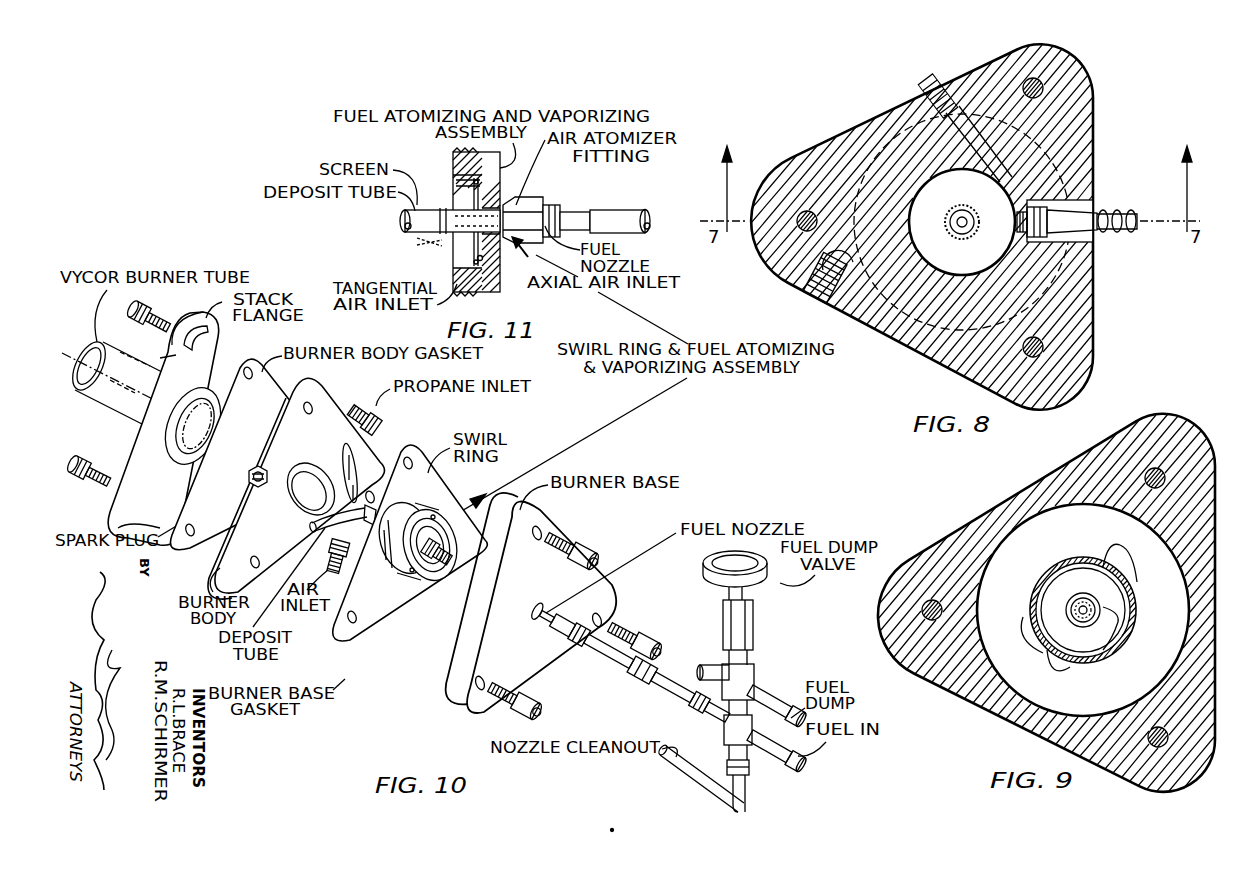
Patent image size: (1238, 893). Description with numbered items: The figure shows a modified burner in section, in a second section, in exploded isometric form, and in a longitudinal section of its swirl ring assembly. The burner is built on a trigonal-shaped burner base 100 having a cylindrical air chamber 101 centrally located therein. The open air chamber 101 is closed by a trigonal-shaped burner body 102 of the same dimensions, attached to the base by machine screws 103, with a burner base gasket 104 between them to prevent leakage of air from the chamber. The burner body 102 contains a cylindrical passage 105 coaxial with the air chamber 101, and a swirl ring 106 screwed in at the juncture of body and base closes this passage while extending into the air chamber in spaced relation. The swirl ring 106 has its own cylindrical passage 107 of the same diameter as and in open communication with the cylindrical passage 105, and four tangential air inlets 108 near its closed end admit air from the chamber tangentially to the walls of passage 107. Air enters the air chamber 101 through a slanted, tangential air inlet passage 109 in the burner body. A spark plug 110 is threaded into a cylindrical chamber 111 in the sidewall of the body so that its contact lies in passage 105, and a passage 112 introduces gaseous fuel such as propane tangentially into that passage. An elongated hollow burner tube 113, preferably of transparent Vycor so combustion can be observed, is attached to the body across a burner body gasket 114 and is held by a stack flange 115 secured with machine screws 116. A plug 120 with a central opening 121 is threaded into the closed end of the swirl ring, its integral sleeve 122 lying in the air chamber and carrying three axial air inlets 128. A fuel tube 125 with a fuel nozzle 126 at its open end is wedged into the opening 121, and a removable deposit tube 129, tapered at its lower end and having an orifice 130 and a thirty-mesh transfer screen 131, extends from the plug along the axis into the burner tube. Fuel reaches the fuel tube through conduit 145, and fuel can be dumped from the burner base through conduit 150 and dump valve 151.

In FIG. 8, the burner base 100 is at (922, 227).
In FIG. 9, the burner base 100 is at (1003, 500).
In FIG. 10, the burner base 100 is at (554, 521).
In FIG. 9, the air chamber 101 is at (1063, 534).
In FIG. 10, the burner body 102 is at (318, 378).
In FIG. 8, the machine screws 103 is at (1043, 86).
In FIG. 9, the machine screws 103 is at (1156, 466).
In FIG. 10, the machine screws 103 is at (597, 550).
In FIG. 10, the burner base gasket 104 is at (427, 442).
In FIG. 8, the cylindrical passage 105 is at (961, 196).
In FIG. 8, the swirl ring 106 is at (940, 258).
In FIG. 9, the swirl ring 106 is at (1047, 690).
In FIG. 11, the swirl ring 106 is at (472, 152).
In FIG. 10, the swirl ring 106 is at (455, 497).
In FIG. 9, the cylindrical passage 107 is at (1083, 610).
In FIG. 9, the tangential air inlets 108 is at (1136, 570).
In FIG. 11, the tangential air inlets 108 is at (478, 258).
In FIG. 10, the tangential air inlets 108 is at (410, 580).
In FIG. 8, the air inlet passage 109 is at (830, 283).
In FIG. 10, the air inlet passage 109 is at (342, 566).
In FIG. 8, the spark plug 110 is at (1112, 208).
In FIG. 10, the spark plug 110 is at (270, 466).
In FIG. 8, the cylindrical chamber 111 is at (1095, 236).
In FIG. 8, the gaseous fuel passage 112 is at (950, 108).
In FIG. 10, the gaseous fuel passage 112 is at (382, 414).
In FIG. 10, the burner tube 113 is at (100, 405).
In FIG. 10, the burner body gasket 114 is at (263, 360).
In FIG. 10, the stack flange 115 is at (228, 338).
In FIG. 10, the machine screws 116 is at (158, 320).
In FIG. 8, the plug 120 is at (977, 226).
In FIG. 9, the plug 120 is at (1118, 650).
In FIG. 11, the plug 120 is at (511, 207).
In FIG. 11, the central opening 121 is at (503, 222).
In FIG. 11, the sleeve 122 is at (546, 198).
In FIG. 11, the fuel tube 125 is at (636, 212).
In FIG. 10, the fuel tube 125 is at (653, 674).
In FIG. 11, the fuel nozzle 126 is at (560, 210).
In FIG. 10, the fuel nozzle 126 is at (547, 630).
In FIG. 11, the axial air inlets 128 is at (520, 256).
In FIG. 10, the axial air inlets 128 is at (447, 565).
In FIG. 8, the deposit tube 129 is at (957, 212).
In FIG. 9, the deposit tube 129 is at (1103, 655).
In FIG. 11, the deposit tube 129 is at (404, 216).
In FIG. 10, the deposit tube 129 is at (312, 525).
In FIG. 8, the orifice 130 is at (963, 228).
In FIG. 9, the orifice 130 is at (1082, 615).
In FIG. 11, the transfer screen 131 is at (430, 244).
In FIG. 10, the conduit 145 is at (750, 771).
In FIG. 10, the conduit 150 is at (779, 698).
In FIG. 10, the dump valve 151 is at (758, 622).